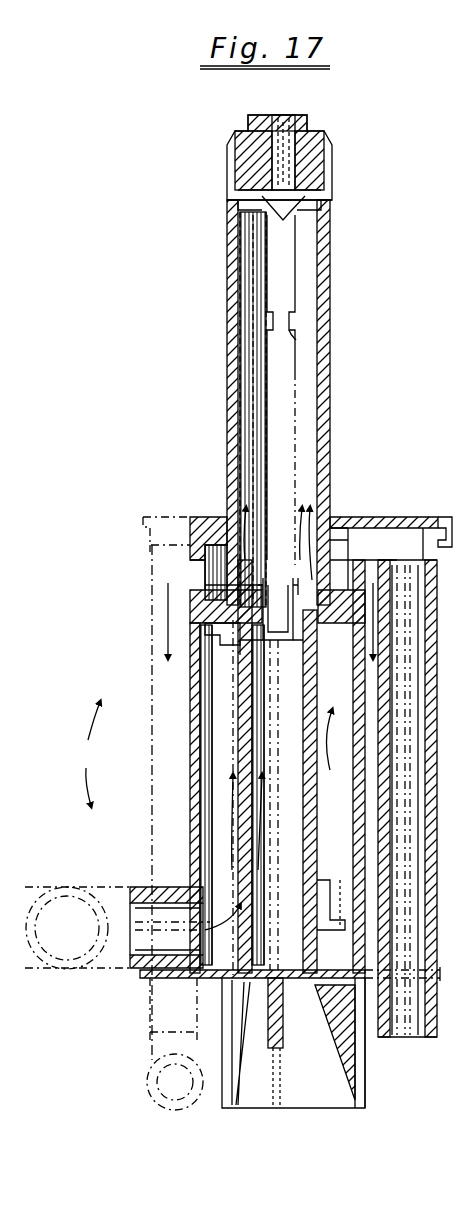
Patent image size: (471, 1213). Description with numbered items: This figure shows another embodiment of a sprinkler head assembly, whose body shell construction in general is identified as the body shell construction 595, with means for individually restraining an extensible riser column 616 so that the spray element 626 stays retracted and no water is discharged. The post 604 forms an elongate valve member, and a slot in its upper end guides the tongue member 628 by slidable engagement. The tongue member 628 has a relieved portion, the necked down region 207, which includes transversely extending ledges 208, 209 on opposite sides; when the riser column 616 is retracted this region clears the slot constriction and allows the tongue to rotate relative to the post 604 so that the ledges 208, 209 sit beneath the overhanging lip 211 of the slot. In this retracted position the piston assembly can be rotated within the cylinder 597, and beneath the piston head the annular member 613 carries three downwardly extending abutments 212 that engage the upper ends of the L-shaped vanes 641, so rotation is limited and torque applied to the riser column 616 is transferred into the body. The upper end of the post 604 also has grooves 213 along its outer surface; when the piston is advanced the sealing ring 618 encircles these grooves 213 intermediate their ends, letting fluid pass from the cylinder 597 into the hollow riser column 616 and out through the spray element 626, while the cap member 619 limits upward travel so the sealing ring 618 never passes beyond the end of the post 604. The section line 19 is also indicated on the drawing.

The section line 19 is at (267, 802).
The necked down region 207 is at (296, 318).
The transversely extending ledge 208 is at (266, 337).
The transversely extending ledge 209 is at (297, 340).
The overhanging lip 211 is at (288, 600).
The abutment 212 is at (212, 640).
The grooves 213 is at (318, 650).
The body shell construction 595 is at (84, 754).
The cylinder 597 is at (190, 760).
The post 604 is at (310, 830).
The annular member 613 is at (205, 612).
The riser column 616 is at (330, 430).
The sealing ring 618 is at (362, 526).
The cap member 619 is at (200, 556).
The spray element 626 is at (330, 172).
The tongue member 628 is at (266, 410).
The L-shaped vanes 641 is at (326, 896).